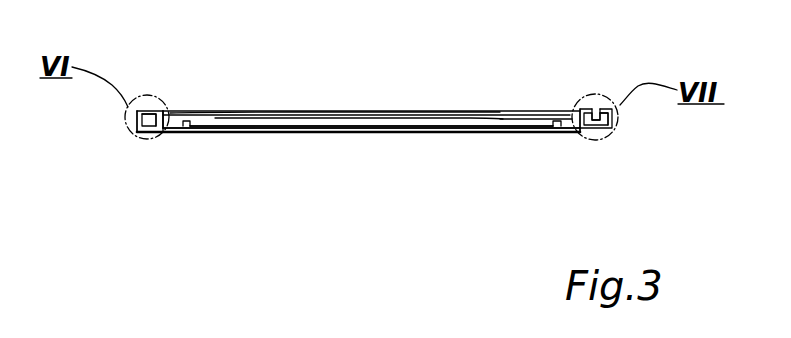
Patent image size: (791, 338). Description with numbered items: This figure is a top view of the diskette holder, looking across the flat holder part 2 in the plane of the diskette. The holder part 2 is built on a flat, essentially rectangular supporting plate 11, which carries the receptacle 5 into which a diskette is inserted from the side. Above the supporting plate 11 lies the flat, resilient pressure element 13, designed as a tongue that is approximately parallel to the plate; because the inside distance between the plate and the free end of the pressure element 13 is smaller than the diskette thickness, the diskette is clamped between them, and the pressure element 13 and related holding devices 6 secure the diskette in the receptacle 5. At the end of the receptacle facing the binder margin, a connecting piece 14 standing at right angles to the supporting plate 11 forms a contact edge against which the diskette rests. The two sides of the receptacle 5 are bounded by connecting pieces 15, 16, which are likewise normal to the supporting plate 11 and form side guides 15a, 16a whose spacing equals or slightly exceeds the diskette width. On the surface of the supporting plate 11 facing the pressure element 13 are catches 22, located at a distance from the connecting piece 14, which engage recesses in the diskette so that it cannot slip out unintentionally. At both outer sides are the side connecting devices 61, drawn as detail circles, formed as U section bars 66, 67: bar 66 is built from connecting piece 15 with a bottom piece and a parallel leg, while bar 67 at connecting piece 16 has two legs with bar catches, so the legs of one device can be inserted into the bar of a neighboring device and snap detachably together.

The holder part 2 is at (453, 84).
The receptacle 5 is at (532, 118).
The holding devices 6 is at (217, 105).
The supporting plate 11 is at (437, 128).
The pressure element 13 is at (383, 115).
The connecting piece 14 is at (374, 126).
The connecting piece 15 is at (165, 132).
The side guide 15a is at (168, 117).
The connecting piece 16 is at (579, 131).
The side guide 16a is at (572, 106).
The catches 22 is at (186, 127).
The side connecting devices 61 is at (603, 80).
The U section bar 66 is at (146, 96).
The U section bar 67 is at (612, 137).